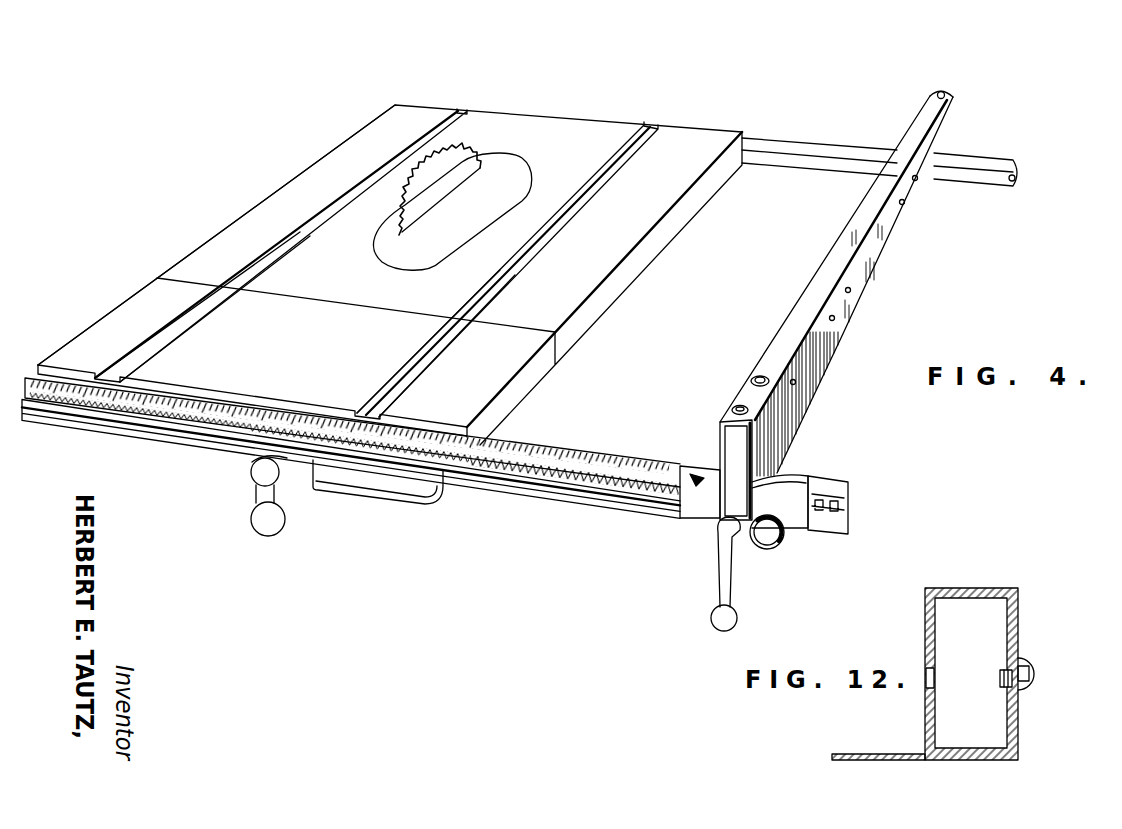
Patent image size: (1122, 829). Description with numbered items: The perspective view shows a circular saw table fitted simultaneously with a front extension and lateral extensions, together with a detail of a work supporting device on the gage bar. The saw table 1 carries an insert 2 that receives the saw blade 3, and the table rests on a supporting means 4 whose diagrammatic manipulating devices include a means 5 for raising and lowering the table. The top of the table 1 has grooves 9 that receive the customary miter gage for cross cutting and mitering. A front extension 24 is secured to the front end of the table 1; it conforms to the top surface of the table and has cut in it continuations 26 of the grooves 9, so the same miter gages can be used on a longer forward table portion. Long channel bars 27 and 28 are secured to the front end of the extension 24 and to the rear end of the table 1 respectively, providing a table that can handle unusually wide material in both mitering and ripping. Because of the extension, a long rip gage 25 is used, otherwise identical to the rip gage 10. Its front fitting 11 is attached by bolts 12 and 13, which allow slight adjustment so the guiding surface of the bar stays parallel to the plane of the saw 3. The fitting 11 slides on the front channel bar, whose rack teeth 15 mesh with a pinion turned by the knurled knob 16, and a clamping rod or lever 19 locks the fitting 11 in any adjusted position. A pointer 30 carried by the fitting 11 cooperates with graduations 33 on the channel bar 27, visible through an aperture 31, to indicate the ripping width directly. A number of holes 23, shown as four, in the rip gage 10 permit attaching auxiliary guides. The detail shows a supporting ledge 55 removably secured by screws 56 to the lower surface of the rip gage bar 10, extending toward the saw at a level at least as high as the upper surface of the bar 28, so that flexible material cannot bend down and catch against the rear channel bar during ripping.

In FIG. 4, the saw table 1 is at (547, 126).
In FIG. 4, the insert 2 is at (518, 175).
In FIG. 4, the saw blade 3 is at (463, 158).
In FIG. 4, the supporting means 4 is at (385, 492).
In FIG. 4, the means for raising and lowering the table 5 is at (250, 475).
In FIG. 4, the grooves 9 is at (459, 113).
In FIG. 12, the rip gage 10 is at (1017, 626).
In FIG. 4, the front fitting 11 is at (783, 486).
In FIG. 4, the bolt 12 is at (733, 409).
In FIG. 4, the bolt 13 is at (752, 381).
In FIG. 4, the rack teeth 15 is at (137, 412).
In FIG. 4, the knurled knob 16 is at (772, 545).
In FIG. 4, the clamping rod or lever 19 is at (717, 590).
In FIG. 4, the holes 23 is at (834, 321).
In FIG. 12, the holes 23 is at (1005, 666).
In FIG. 4, the front extension 24 is at (100, 322).
In FIG. 4, the long rip gage 25 is at (876, 263).
In FIG. 4, the continuations of the grooves 26 is at (192, 319).
In FIG. 4, the long channel bar 27 is at (835, 491).
In FIG. 4, the long channel bar 28 is at (992, 160).
In FIG. 4, the pointer 30 is at (699, 495).
In FIG. 4, the aperture 31 is at (692, 471).
In FIG. 4, the graduations 33 is at (538, 457).
In FIG. 12, the supporting ledge 55 is at (862, 757).
In FIG. 12, the screws 56 is at (1033, 669).